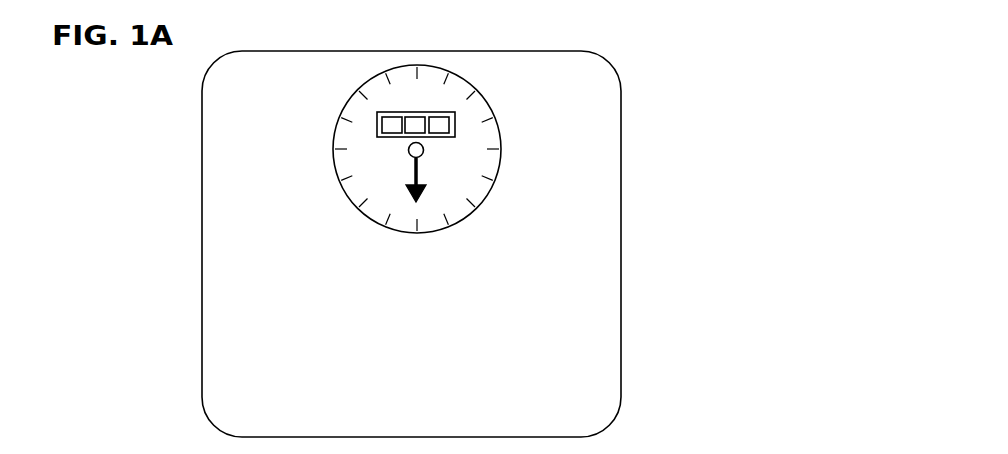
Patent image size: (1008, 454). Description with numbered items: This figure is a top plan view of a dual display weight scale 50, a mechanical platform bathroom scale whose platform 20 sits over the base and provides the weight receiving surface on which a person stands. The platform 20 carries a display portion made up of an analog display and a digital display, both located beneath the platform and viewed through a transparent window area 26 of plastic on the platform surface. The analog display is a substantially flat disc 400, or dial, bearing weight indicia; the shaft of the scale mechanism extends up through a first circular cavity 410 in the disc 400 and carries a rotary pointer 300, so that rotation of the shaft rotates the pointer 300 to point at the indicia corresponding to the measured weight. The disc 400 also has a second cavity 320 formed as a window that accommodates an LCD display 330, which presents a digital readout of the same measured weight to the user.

The platform 20 is at (605, 220).
The transparent window area 26 is at (318, 164).
The weighing scale 50 is at (168, 155).
The rotary pointer 300 is at (409, 155).
The second cavity 320 is at (457, 120).
The LCD display 330 is at (378, 123).
The disc 400 is at (493, 168).
The first circular cavity 410 is at (423, 155).